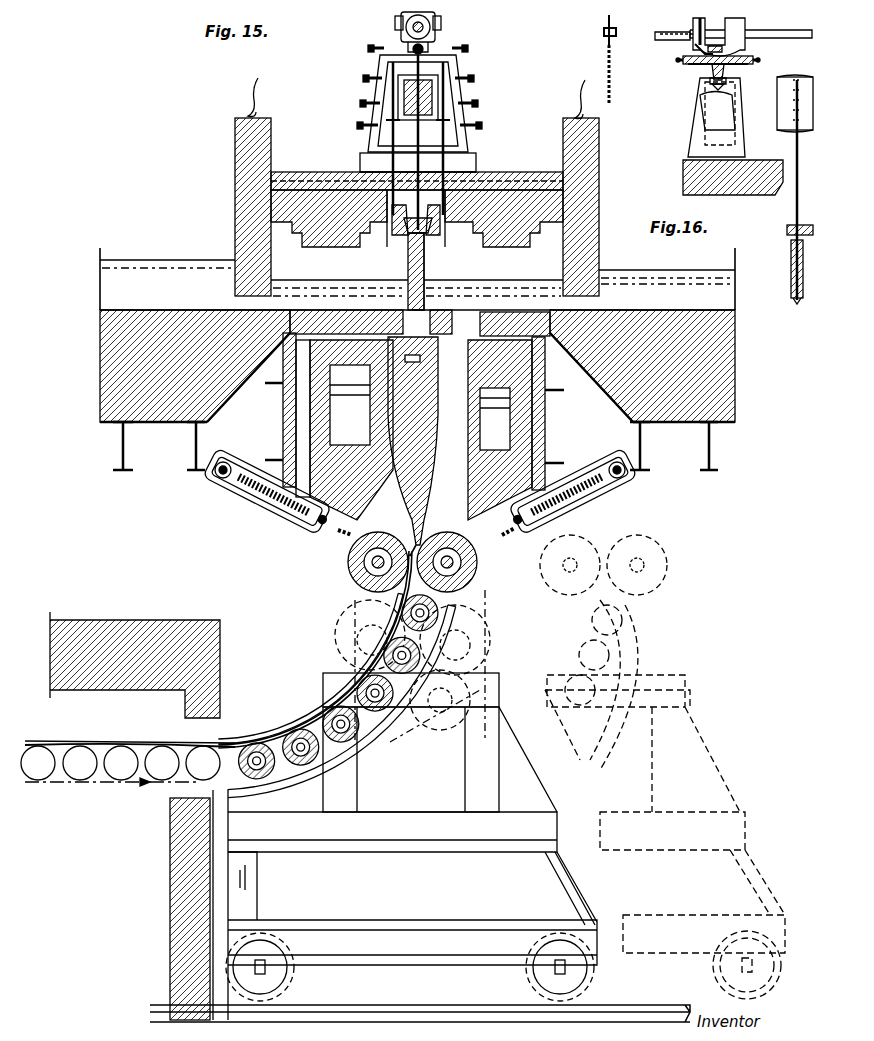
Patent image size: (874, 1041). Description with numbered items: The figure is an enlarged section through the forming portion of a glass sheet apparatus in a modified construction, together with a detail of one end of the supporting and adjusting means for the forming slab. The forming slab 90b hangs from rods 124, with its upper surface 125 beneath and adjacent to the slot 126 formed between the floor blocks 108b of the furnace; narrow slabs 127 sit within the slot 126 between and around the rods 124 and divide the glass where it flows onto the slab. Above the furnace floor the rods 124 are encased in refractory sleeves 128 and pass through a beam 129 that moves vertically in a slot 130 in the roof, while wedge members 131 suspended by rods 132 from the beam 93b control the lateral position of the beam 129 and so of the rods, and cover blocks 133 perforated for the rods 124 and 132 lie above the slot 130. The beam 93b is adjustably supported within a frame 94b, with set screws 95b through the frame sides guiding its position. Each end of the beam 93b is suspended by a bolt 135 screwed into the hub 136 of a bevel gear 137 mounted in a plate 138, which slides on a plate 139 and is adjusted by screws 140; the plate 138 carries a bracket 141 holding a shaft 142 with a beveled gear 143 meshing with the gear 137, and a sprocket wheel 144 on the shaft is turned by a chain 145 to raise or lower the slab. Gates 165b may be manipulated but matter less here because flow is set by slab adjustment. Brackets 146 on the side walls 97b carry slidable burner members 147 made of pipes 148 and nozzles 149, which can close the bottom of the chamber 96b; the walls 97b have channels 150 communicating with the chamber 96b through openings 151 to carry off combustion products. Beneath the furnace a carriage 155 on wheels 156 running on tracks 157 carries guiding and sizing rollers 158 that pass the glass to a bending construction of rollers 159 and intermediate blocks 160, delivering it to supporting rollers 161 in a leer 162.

In FIG. 15, the beam 93b is at (438, 72).
In FIG. 16, the beam 93b is at (750, 122).
In FIG. 15, the frame 94b is at (458, 92).
In FIG. 15, the set screws 95b is at (462, 120).
In FIG. 15, the cover blocks 133 is at (368, 168).
In FIG. 15, the rods 132 is at (448, 165).
In FIG. 15, the wedge members 131 is at (392, 215).
In FIG. 15, the slot 130 is at (470, 238).
In FIG. 15, the beam 129 is at (414, 236).
In FIG. 16, the beam 129 is at (790, 233).
In FIG. 15, the rods 124 is at (426, 262).
In FIG. 16, the rods 124 is at (797, 172).
In FIG. 15, the refractory sleeves 128 is at (426, 278).
In FIG. 16, the refractory sleeves 128 is at (791, 280).
In FIG. 15, the gates 165b is at (247, 203).
In FIG. 15, the slot 126 is at (430, 325).
In FIG. 15, the upper surface 125 is at (434, 352).
In FIG. 15, the floor blocks 108b is at (370, 336).
In FIG. 15, the narrow slabs 127 is at (378, 372).
In FIG. 15, the openings 151 is at (330, 392).
In FIG. 15, the channels 150 is at (350, 446).
In FIG. 15, the chamber 96b is at (296, 413).
In FIG. 15, the side walls 97b is at (545, 408).
In FIG. 15, the brackets 146 is at (270, 473).
In FIG. 15, the burner members 147 is at (280, 505).
In FIG. 15, the pipes 148 is at (214, 477).
In FIG. 15, the nozzles 149 is at (325, 525).
In FIG. 15, the forming slab 90b is at (425, 478).
In FIG. 15, the guiding and sizing rollers 158 is at (352, 580).
In FIG. 15, the rollers 159 is at (255, 745).
In FIG. 15, the intermediate blocks 160 is at (279, 740).
In FIG. 15, the supporting rollers 161 is at (118, 770).
In FIG. 15, the leer 162 is at (182, 855).
In FIG. 15, the carriage 155 is at (525, 803).
In FIG. 15, the wheels 156 is at (292, 980).
In FIG. 15, the tracks 157 is at (400, 1010).
In FIG. 16, the sprocket wheel 144 is at (604, 20).
In FIG. 16, the chain 145 is at (609, 57).
In FIG. 16, the bracket 141 is at (680, 30).
In FIG. 16, the shaft 142 is at (790, 28).
In FIG. 16, the beveled gear 143 is at (705, 35).
In FIG. 16, the bevel gear 137 is at (724, 46).
In FIG. 16, the plate 138 is at (695, 50).
In FIG. 16, the screws 140 is at (748, 58).
In FIG. 16, the plate 139 is at (698, 66).
In FIG. 16, the hub 136 is at (726, 70).
In FIG. 16, the bolt 135 is at (712, 80).